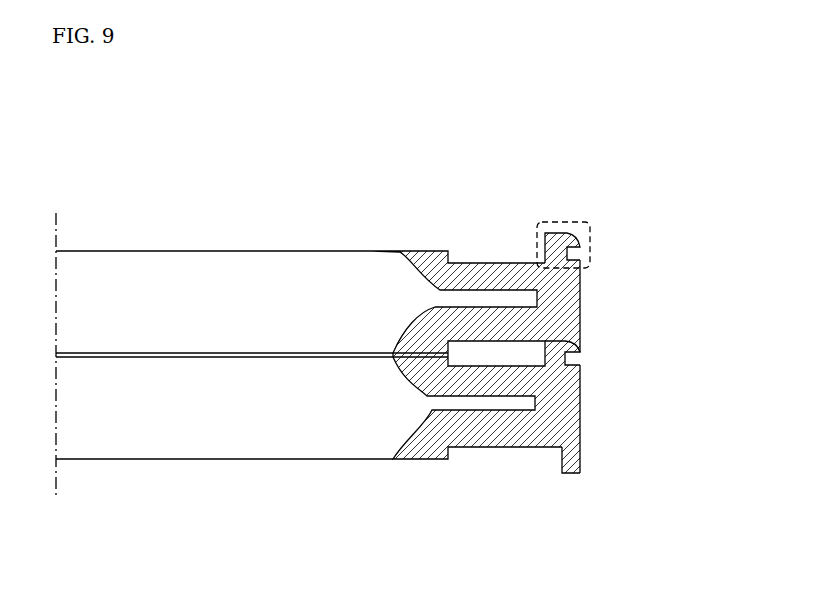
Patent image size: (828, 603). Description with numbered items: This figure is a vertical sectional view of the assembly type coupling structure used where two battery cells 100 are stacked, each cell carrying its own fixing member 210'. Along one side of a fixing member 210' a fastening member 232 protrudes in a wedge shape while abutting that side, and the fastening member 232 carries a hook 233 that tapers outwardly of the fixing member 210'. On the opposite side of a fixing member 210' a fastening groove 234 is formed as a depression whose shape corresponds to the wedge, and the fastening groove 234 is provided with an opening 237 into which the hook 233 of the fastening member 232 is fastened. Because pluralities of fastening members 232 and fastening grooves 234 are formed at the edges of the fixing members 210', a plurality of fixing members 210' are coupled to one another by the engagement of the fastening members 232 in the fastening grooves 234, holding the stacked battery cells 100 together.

The battery cell 100 is at (270, 267).
The fastening member 232 is at (577, 206).
The hook 233 is at (575, 241).
The fixing member 210' is at (620, 351).
The opening 237 is at (570, 452).
The fastening groove 234 is at (545, 466).